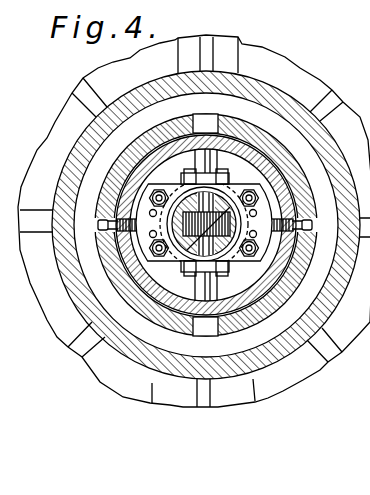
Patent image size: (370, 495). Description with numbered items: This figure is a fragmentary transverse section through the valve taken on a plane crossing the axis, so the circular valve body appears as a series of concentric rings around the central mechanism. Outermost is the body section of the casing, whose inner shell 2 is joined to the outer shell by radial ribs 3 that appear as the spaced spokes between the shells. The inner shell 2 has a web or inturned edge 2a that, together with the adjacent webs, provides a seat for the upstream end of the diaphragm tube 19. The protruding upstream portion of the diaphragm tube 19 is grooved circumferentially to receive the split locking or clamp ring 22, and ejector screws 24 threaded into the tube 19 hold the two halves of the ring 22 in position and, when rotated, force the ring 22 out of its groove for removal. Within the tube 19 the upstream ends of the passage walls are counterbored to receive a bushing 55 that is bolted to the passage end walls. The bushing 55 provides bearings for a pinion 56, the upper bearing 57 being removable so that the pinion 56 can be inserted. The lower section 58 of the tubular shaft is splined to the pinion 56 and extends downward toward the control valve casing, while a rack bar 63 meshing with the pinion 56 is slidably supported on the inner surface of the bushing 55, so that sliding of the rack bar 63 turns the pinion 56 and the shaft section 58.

The inner shell 2 is at (63, 255).
The web or inturned edge 2a is at (80, 201).
The radial ribs 3 is at (79, 352).
The diaphragm tube 19 is at (118, 261).
The split locking or clamp ring 22 is at (228, 328).
The ejector screws 24 is at (110, 244).
The bushing 55 is at (150, 265).
The pinion 56 is at (195, 256).
The upper bearing 57 is at (191, 179).
The lower section of the tubular shaft 58 is at (215, 286).
The rack bar 63 is at (231, 198).